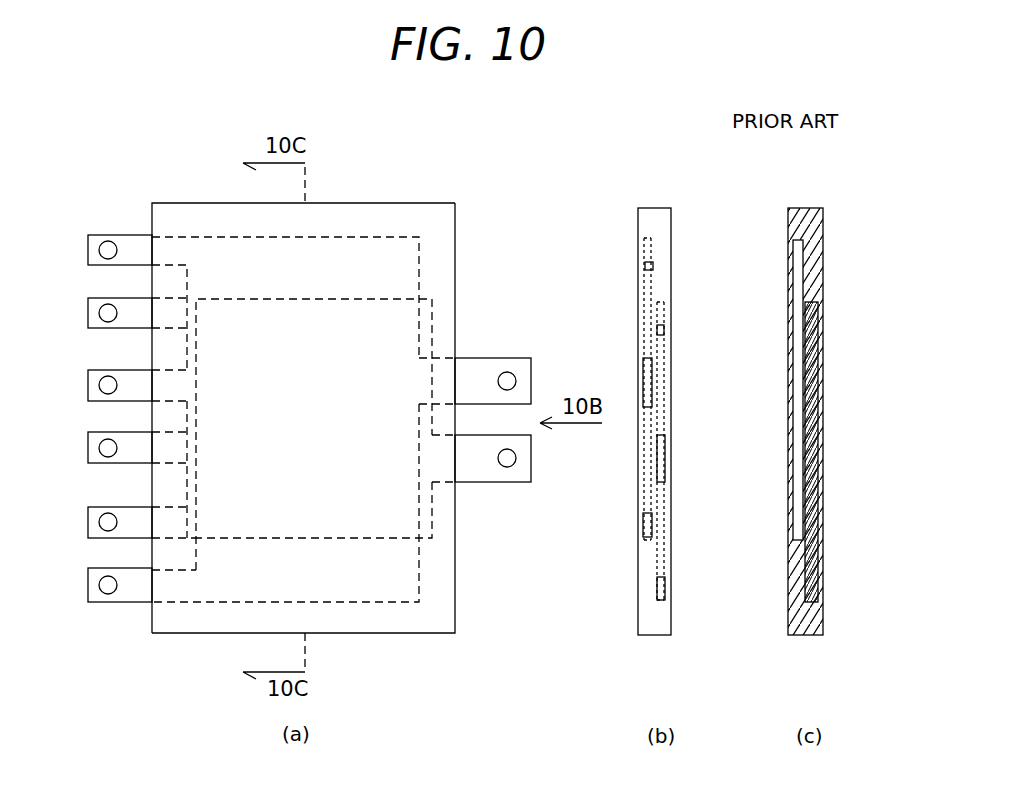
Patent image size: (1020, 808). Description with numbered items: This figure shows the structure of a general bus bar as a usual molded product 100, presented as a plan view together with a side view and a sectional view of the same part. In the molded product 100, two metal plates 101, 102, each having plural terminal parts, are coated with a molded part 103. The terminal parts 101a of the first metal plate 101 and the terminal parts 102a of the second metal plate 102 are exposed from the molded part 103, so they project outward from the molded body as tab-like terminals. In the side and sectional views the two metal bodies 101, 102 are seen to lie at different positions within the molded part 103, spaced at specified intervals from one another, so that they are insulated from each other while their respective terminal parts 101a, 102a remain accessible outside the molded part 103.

The molded product 100 is at (447, 194).
The metal plate 101 is at (330, 237).
The terminal part 101a is at (137, 372).
The metal plate 102 is at (367, 299).
The terminal part 102a is at (135, 464).
The molded part 103 is at (410, 619).